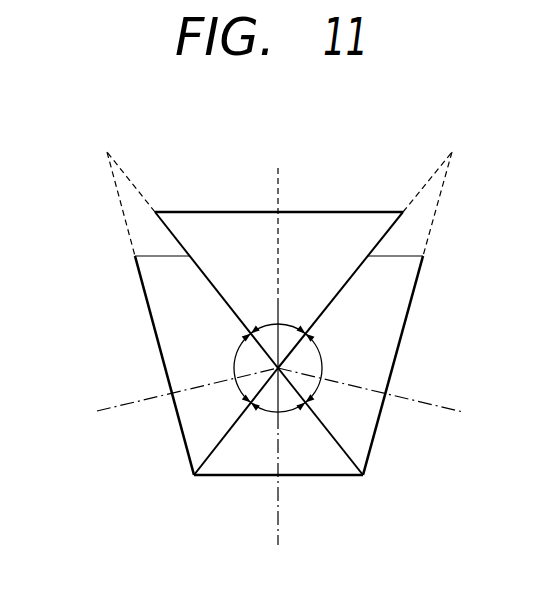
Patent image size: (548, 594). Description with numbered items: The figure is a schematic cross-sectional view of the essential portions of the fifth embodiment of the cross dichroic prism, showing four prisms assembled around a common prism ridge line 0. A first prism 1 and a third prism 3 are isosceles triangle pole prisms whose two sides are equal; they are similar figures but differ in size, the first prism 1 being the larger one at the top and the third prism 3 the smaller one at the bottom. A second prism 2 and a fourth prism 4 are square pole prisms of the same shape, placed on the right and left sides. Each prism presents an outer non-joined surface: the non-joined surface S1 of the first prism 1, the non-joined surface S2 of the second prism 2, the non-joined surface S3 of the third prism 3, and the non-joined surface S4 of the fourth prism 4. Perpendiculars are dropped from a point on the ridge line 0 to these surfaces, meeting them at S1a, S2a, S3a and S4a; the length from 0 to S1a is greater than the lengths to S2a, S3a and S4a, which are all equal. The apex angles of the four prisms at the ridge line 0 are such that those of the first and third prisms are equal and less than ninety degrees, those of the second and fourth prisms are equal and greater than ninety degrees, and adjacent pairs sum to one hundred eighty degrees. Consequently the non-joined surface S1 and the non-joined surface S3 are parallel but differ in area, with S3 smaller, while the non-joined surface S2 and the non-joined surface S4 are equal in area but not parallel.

The first prism 1 is at (214, 228).
The second prism 2 is at (403, 273).
The third prism 3 is at (247, 465).
The fourth prism 4 is at (148, 273).
The non-joined surface S1 is at (353, 212).
The non-joined surface S2 is at (415, 300).
The non-joined surface S3 is at (340, 477).
The non-joined surface S4 is at (148, 308).
The foot of perpendicular to non-joined surface S1 S1a is at (278, 211).
The foot of perpendicular to non-joined surface S2 S2a is at (392, 390).
The foot of perpendicular to non-joined surface S3 S3a is at (280, 477).
The foot of perpendicular to non-joined surface S4 S4a is at (172, 390).
The prism ridge line 0 is at (283, 365).